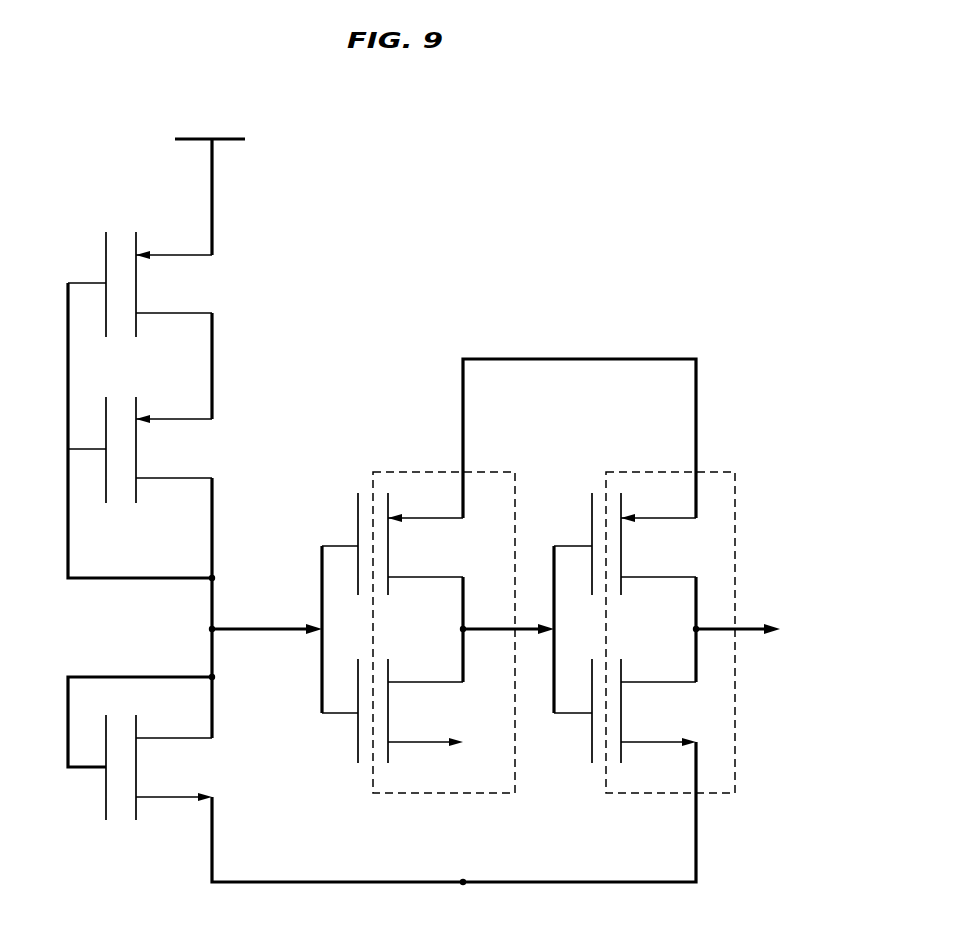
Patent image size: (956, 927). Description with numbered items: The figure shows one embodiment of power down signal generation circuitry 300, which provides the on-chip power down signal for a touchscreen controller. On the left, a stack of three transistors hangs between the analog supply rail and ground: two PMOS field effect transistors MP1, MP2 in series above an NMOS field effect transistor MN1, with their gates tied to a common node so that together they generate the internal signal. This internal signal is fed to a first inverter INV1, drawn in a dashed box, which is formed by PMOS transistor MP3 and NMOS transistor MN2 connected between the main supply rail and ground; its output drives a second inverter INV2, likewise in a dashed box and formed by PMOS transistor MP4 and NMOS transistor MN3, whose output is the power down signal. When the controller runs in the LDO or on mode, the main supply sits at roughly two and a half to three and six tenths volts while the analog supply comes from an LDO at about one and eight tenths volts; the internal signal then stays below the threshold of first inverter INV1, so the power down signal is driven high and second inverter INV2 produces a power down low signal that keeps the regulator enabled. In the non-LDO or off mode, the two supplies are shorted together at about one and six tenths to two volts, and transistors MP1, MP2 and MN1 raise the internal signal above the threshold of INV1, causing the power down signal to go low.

The power down signal generation circuitry 300 is at (429, 498).
The PMOS field effect transistor MP1 is at (150, 325).
The PMOS field effect transistor MP2 is at (150, 487).
The NMOS field effect transistor MN1 is at (170, 748).
The first inverter INV1 is at (418, 603).
The PMOS field effect transistor MP3 is at (422, 587).
The NMOS field effect transistor MN2 is at (422, 711).
The second inverter INV2 is at (660, 603).
The PMOS field effect transistor MP4 is at (658, 587).
The NMOS field effect transistor MN3 is at (658, 711).